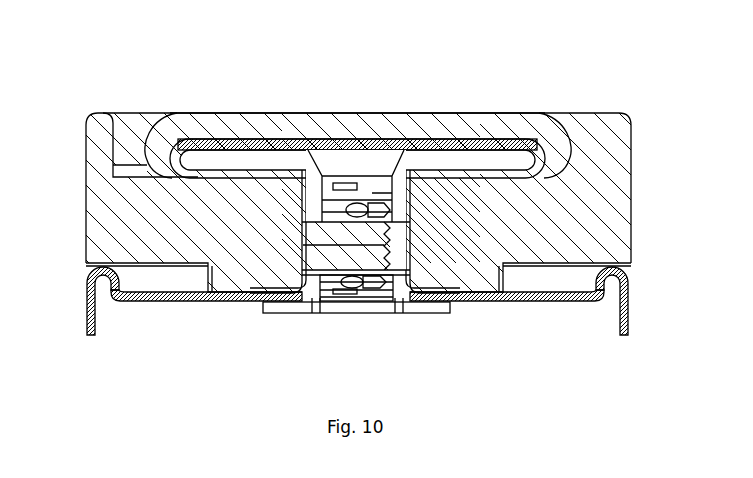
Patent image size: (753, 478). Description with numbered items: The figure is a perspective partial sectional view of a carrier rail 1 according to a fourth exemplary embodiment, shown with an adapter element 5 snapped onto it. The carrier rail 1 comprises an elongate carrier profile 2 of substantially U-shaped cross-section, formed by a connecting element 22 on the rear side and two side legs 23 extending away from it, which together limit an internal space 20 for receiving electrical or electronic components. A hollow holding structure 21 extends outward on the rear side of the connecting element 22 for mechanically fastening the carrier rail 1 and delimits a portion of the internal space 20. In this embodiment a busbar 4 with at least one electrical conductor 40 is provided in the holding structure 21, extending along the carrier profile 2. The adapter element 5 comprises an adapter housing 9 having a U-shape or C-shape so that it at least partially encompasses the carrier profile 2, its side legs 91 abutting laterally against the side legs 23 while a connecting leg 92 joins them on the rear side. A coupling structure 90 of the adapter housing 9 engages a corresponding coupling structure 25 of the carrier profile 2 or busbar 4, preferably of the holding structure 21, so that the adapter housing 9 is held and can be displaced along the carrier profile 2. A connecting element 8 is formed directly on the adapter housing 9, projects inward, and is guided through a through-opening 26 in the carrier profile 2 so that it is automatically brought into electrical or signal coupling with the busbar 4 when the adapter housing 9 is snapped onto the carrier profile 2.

The carrier rail 1 is at (376, 198).
The carrier profile 2 is at (358, 313).
The busbar 4 is at (409, 303).
The adapter element 5 is at (376, 180).
The connecting element 8 is at (315, 303).
The adapter housing 9 is at (241, 113).
The internal space 20 is at (356, 325).
The holding structure 21 is at (423, 141).
The connecting element 22 is at (197, 304).
The side legs 23 is at (87, 318).
The coupling structure 25 is at (220, 166).
The through-opening 26 is at (307, 219).
The electrical conductor 40 is at (361, 303).
The coupling structure 90 is at (242, 280).
The side legs 91 is at (633, 163).
The connecting leg 92 is at (377, 113).